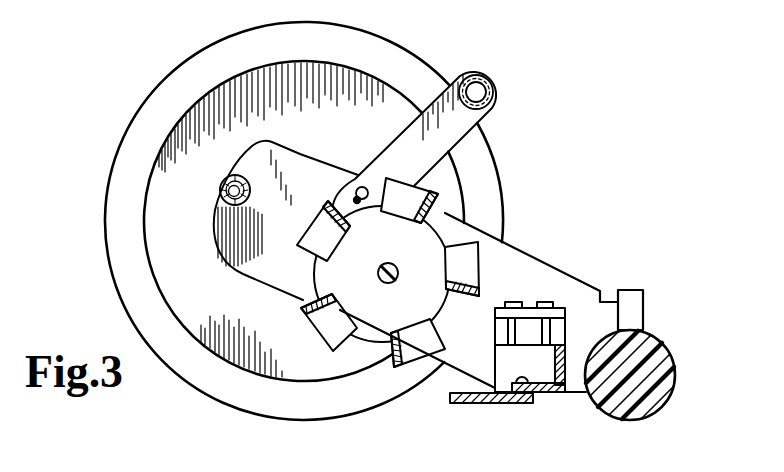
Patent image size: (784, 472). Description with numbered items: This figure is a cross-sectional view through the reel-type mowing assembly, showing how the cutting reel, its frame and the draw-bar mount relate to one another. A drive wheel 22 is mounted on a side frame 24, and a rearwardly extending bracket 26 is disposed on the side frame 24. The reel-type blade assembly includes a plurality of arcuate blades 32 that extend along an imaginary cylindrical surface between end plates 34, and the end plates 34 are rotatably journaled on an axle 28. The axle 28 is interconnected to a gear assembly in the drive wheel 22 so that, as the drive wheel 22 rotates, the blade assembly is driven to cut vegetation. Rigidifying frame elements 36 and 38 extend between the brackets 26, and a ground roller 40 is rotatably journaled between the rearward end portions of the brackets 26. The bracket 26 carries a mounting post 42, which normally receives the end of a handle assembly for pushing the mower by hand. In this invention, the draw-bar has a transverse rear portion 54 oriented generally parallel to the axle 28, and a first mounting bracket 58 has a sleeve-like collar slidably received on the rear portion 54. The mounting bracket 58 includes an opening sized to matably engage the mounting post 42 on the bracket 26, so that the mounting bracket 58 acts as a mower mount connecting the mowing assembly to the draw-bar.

The drive wheel 22 is at (250, 45).
The side frame 24 is at (240, 107).
The bracket 26 is at (542, 277).
The axle 28 is at (392, 278).
The arcuate blade 32 is at (328, 332).
The end plate 34 is at (427, 228).
The rigidifying frame element 36 is at (222, 203).
The rigidifying frame element 38 is at (547, 397).
The ground roller 40 is at (673, 392).
The mounting post 42 is at (360, 188).
The rear portion 54 is at (498, 103).
The first mounting bracket 58 is at (463, 117).